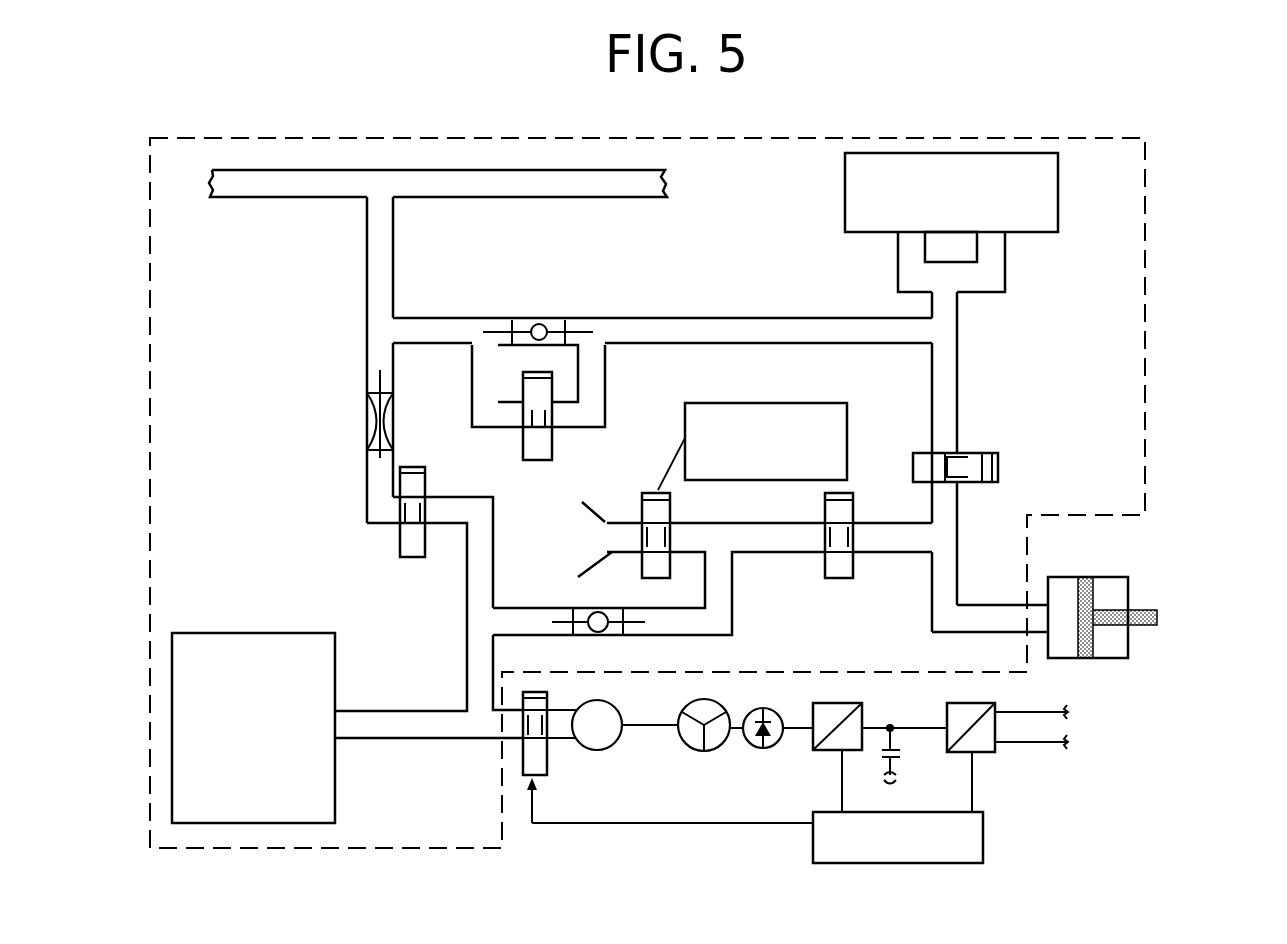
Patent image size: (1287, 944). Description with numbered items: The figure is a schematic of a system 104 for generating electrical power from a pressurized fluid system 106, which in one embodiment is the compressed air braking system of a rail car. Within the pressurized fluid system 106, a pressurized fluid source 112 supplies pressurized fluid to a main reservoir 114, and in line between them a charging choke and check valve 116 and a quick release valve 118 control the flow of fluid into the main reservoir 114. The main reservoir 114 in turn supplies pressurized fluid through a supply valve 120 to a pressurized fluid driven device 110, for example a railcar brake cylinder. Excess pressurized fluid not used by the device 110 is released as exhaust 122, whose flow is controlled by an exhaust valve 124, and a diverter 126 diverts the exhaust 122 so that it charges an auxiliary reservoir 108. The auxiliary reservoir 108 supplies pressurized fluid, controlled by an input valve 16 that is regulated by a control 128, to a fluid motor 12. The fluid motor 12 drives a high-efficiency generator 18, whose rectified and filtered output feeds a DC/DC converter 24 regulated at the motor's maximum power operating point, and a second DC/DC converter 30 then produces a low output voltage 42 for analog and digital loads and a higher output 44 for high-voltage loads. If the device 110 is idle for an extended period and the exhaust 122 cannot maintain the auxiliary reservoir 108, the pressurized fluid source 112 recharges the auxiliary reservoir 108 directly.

The fluid motor 12 is at (613, 702).
The input valve 16 is at (522, 760).
The high-efficiency generator 18 is at (710, 702).
The DC/DC converter 24 is at (862, 714).
The second DC/DC converter 30 is at (980, 752).
The output voltage 42 is at (1053, 745).
The output 44 is at (1058, 708).
The system for generating electrical power 104 is at (1063, 790).
The pressurized fluid system 106 is at (1105, 290).
The auxiliary reservoir 108 is at (222, 633).
The pressurized fluid driven device 110 is at (1105, 577).
The pressurized fluid source 112 is at (268, 197).
The main reservoir 114 is at (845, 185).
The charging choke and check valve 116 is at (593, 340).
The quick release valve 118 is at (552, 443).
The supply valve 120 is at (1000, 465).
The exhaust 122 is at (607, 526).
The exhaust valve 124 is at (853, 558).
The diverter 126 is at (670, 517).
The control 128 is at (902, 863).